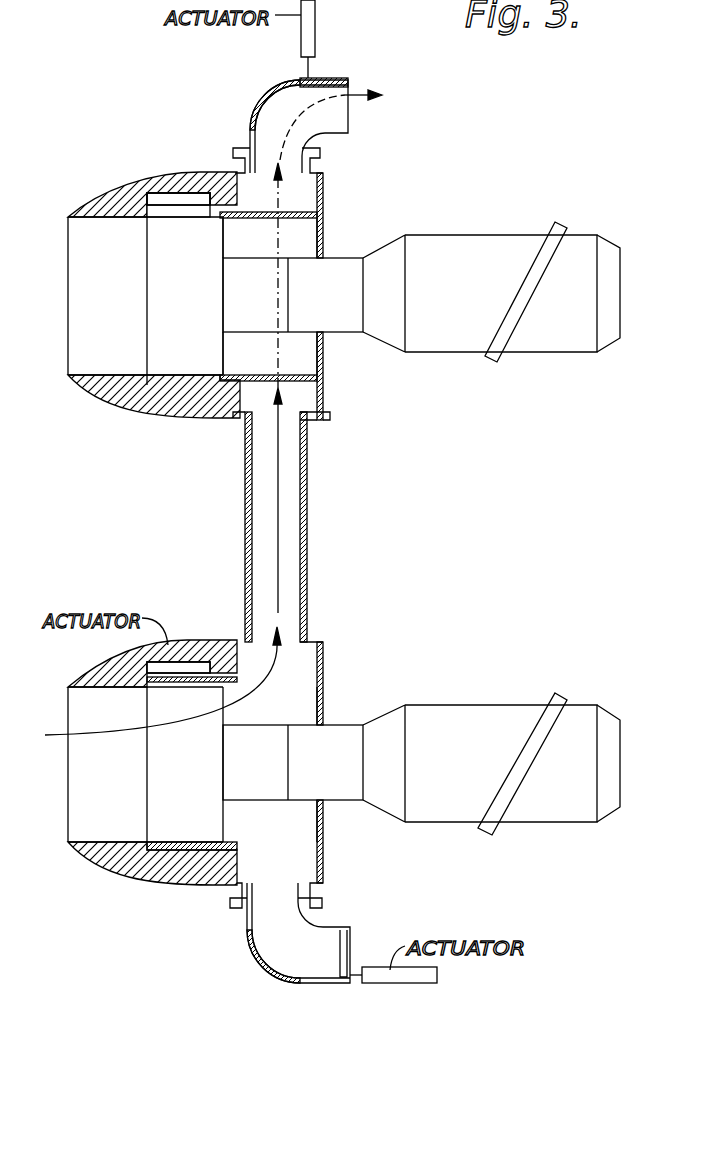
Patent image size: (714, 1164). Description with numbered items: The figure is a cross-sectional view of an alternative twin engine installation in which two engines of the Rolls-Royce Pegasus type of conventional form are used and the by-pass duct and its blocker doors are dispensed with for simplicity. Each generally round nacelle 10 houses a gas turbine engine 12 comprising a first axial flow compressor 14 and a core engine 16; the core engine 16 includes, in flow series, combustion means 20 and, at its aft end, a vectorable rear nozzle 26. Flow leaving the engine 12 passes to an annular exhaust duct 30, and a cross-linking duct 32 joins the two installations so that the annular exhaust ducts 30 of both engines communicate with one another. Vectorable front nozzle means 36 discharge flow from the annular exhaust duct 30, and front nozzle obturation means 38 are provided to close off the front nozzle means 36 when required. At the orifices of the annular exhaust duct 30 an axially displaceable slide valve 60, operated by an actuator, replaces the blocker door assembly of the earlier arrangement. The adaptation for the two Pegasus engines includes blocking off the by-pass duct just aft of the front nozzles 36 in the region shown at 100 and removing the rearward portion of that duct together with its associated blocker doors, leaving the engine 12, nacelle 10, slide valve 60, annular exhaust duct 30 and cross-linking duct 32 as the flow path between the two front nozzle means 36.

The nacelle 10 is at (132, 403).
The gas turbine engine 12 is at (500, 250).
The first axial flow compressor 14 is at (172, 232).
The core engine 16 is at (385, 323).
The combustion means 20 is at (328, 270).
The vectorable rear nozzle 26 is at (605, 255).
The annular exhaust duct 30 is at (323, 173).
The cross-linking duct 32 is at (290, 510).
The vectorable front nozzle means 36 is at (266, 102).
The front nozzle obturation means 38 is at (332, 78).
The axially displaceable slide valve 60 is at (300, 212).
The blocked-off region of by-pass duct 100 is at (323, 235).